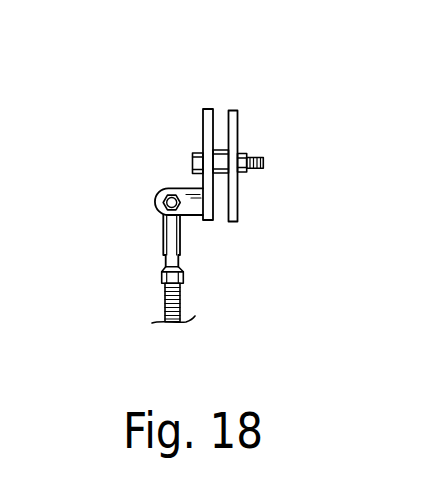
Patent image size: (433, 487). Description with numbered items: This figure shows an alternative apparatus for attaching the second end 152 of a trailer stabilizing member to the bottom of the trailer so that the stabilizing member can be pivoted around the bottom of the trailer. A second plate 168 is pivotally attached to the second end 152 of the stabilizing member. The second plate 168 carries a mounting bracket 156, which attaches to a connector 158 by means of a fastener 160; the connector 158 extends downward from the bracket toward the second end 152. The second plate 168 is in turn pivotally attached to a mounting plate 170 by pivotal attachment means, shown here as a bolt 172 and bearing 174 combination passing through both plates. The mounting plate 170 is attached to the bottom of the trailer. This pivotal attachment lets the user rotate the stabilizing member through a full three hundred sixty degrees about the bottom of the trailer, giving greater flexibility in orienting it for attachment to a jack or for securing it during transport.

The second end 152 is at (184, 277).
The mounting bracket 156 is at (158, 190).
The connector 158 is at (162, 240).
The fastener 160 is at (155, 207).
The second plate 168 is at (202, 121).
The mounting plate 170 is at (238, 124).
The bolt 172 is at (262, 170).
The bearing 174 is at (218, 146).